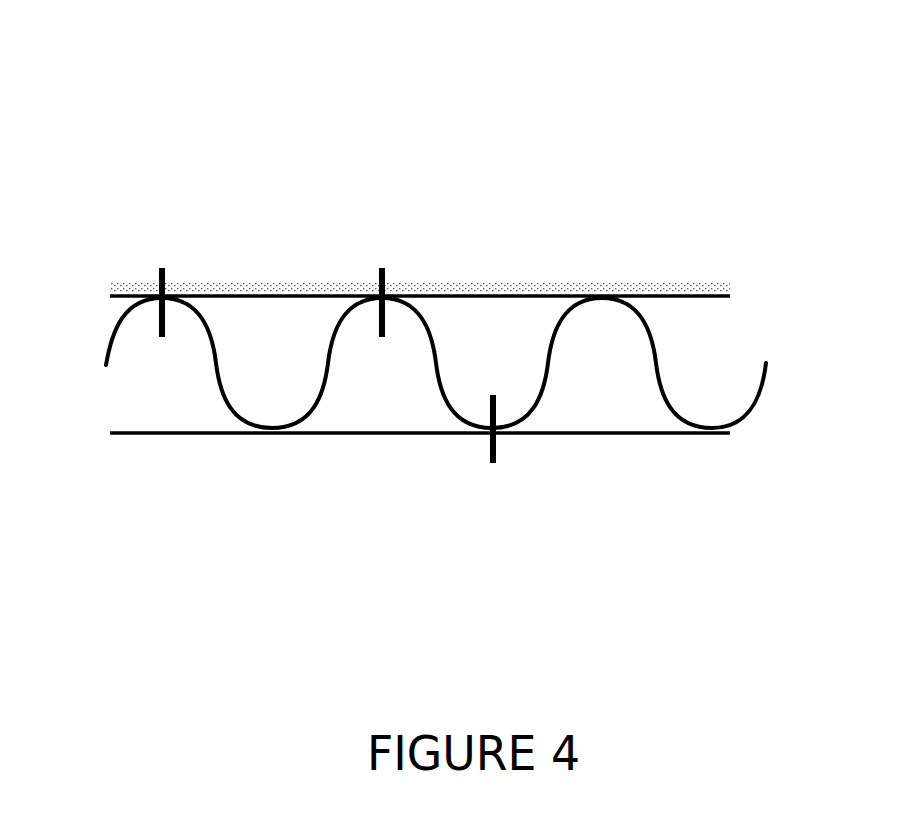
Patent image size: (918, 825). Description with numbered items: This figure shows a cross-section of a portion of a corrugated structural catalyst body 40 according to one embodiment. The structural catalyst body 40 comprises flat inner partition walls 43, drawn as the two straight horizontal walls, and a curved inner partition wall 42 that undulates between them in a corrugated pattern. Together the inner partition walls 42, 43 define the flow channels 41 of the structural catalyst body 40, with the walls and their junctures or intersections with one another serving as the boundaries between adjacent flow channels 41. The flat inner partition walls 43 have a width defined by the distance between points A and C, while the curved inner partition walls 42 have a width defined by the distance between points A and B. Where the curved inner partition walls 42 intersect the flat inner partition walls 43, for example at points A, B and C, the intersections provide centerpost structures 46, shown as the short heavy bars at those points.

The structural catalyst body 40 is at (158, 135).
The flow channels 41 is at (172, 380).
The curved inner partition walls 42 is at (548, 338).
The flat inner partition walls 43 is at (260, 296).
The centerpost structures 46 is at (167, 297).